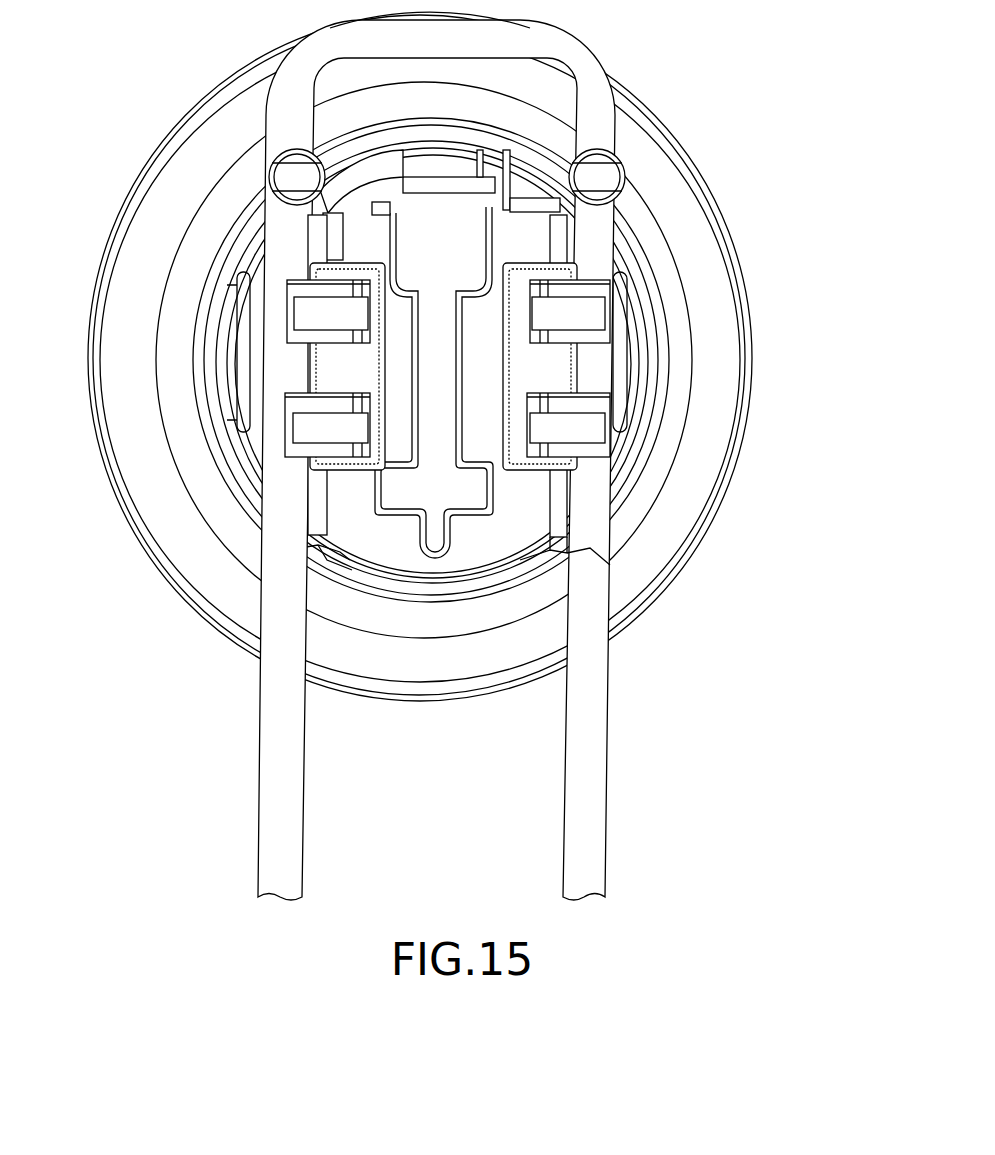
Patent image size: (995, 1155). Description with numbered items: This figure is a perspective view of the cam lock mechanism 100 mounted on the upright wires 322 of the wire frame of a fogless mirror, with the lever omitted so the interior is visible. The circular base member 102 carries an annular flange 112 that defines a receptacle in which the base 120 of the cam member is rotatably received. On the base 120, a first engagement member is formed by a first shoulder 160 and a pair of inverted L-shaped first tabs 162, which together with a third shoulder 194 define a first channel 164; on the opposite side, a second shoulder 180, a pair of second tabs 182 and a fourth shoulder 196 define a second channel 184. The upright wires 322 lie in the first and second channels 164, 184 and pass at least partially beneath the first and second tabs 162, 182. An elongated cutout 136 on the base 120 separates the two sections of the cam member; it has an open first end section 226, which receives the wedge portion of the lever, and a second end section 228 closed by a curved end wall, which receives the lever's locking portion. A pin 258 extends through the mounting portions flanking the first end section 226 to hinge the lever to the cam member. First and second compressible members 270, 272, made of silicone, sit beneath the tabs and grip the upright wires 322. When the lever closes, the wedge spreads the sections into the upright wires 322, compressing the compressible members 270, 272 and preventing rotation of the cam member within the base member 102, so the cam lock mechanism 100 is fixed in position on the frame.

The cam lock mechanism 100 is at (768, 125).
The base member 102 is at (735, 347).
The annular flange 112 is at (665, 448).
The base 120 is at (398, 553).
The elongated cutout 136 is at (435, 300).
The first shoulder 160 is at (322, 518).
The first tab 162 is at (293, 288).
The first channel 164 is at (262, 265).
The second shoulder 180 is at (567, 503).
The second tab 182 is at (595, 292).
The second channel 184 is at (617, 268).
The third shoulder 194 is at (237, 383).
The fourth shoulder 196 is at (640, 383).
The first end section 226 is at (393, 243).
The second end section 228 is at (472, 522).
The pin 258 is at (465, 183).
The first compressible member 270 is at (353, 367).
The second compressible member 272 is at (550, 372).
The upright wires 322 is at (258, 772).